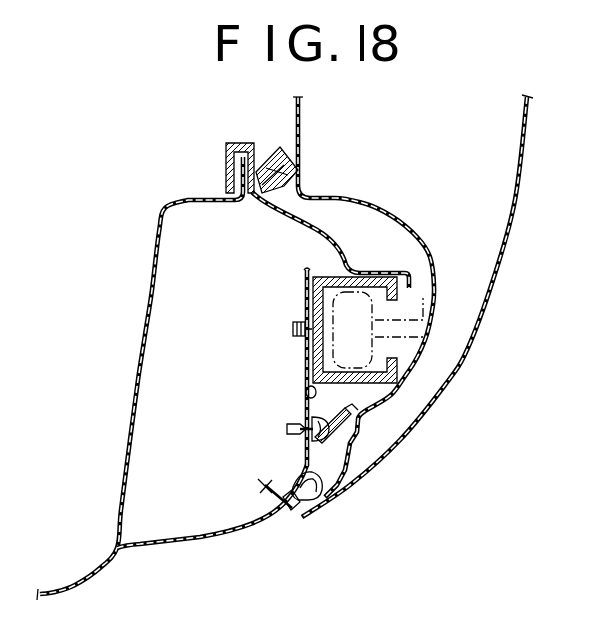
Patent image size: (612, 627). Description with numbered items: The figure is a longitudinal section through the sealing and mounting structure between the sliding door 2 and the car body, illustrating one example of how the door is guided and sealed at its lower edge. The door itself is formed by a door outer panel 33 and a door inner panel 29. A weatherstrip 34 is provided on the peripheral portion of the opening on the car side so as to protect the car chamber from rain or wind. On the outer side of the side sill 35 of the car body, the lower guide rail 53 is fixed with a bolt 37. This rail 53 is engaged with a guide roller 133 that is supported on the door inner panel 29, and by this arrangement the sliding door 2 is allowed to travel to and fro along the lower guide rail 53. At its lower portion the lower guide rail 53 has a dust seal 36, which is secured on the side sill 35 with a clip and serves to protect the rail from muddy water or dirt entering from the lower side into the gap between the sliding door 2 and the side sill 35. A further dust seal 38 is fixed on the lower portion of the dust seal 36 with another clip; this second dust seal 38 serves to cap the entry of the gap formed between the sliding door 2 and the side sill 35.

The sliding door 2 is at (432, 306).
The door inner panel 29 is at (409, 232).
The door outer panel 33 is at (507, 235).
The weatherstrip 34 is at (288, 160).
The side sill 35 is at (302, 392).
The dust seal 36 is at (358, 428).
The bolt 37 is at (293, 329).
The dust seal 38 is at (297, 510).
The lower guide rail 53 is at (390, 363).
The guide roller 133 is at (338, 347).